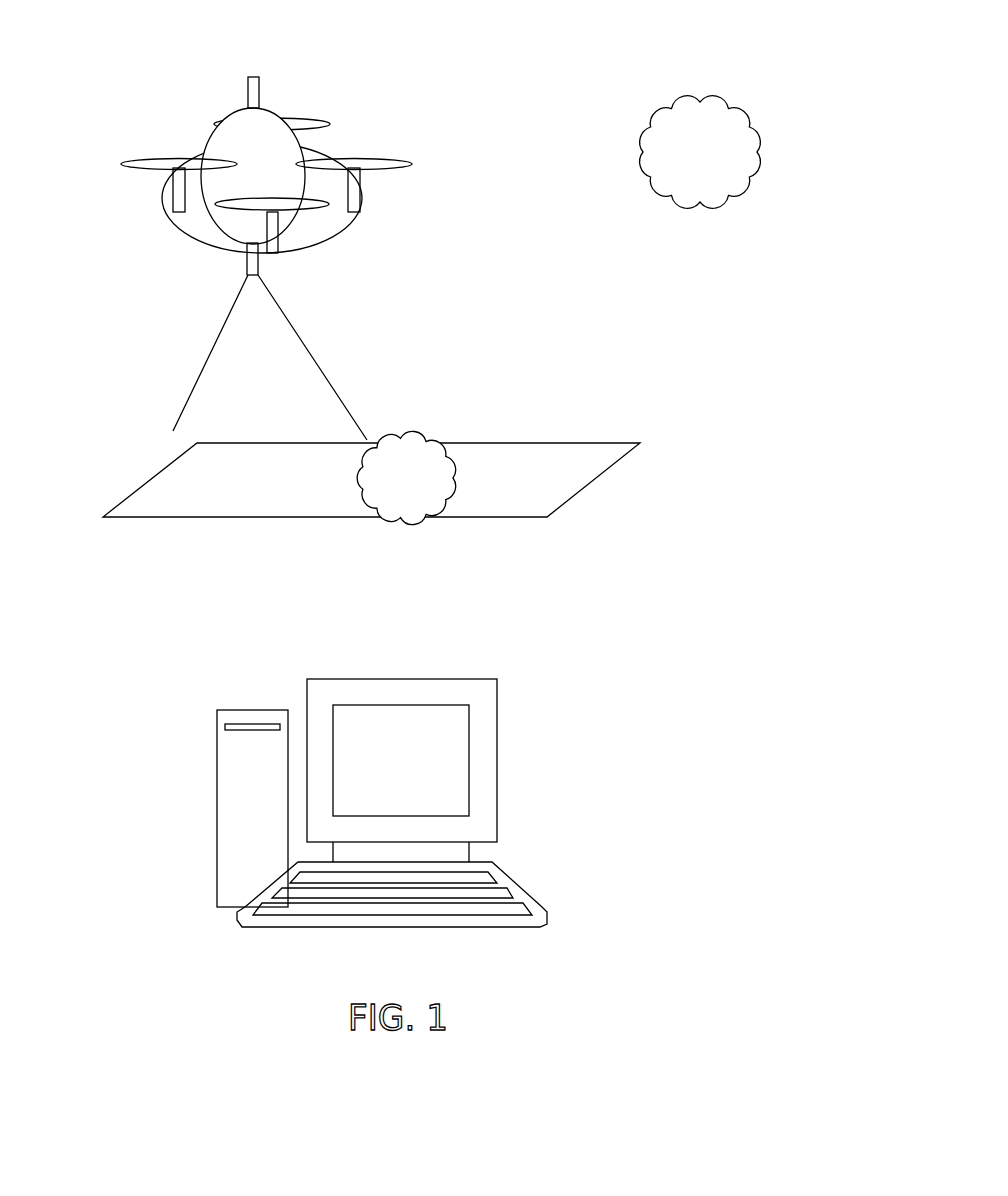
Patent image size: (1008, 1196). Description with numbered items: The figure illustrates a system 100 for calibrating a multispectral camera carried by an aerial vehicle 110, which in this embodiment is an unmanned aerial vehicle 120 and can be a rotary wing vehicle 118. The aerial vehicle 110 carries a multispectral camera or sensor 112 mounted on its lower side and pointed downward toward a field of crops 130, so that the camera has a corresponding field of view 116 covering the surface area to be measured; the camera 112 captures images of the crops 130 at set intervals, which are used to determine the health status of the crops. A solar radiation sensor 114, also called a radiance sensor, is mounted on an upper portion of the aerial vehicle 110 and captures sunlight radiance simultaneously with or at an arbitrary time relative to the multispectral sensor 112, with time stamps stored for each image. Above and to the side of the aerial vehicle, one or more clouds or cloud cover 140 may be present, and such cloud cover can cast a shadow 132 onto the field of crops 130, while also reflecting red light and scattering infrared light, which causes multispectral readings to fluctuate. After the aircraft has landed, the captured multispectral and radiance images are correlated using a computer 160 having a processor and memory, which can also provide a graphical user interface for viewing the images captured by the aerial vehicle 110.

The system 100 is at (637, 47).
The aerial vehicle 110 is at (205, 85).
The multispectral camera 112 is at (266, 262).
The solar radiation sensor 114 is at (260, 95).
The field of view 116 is at (204, 363).
The rotary wing vehicle 118 is at (122, 163).
The unmanned aerial vehicle 120 is at (217, 197).
The field of crops 130 is at (602, 475).
The shadow 132 is at (420, 428).
The cloud 140 is at (633, 150).
The computer 160 is at (512, 661).